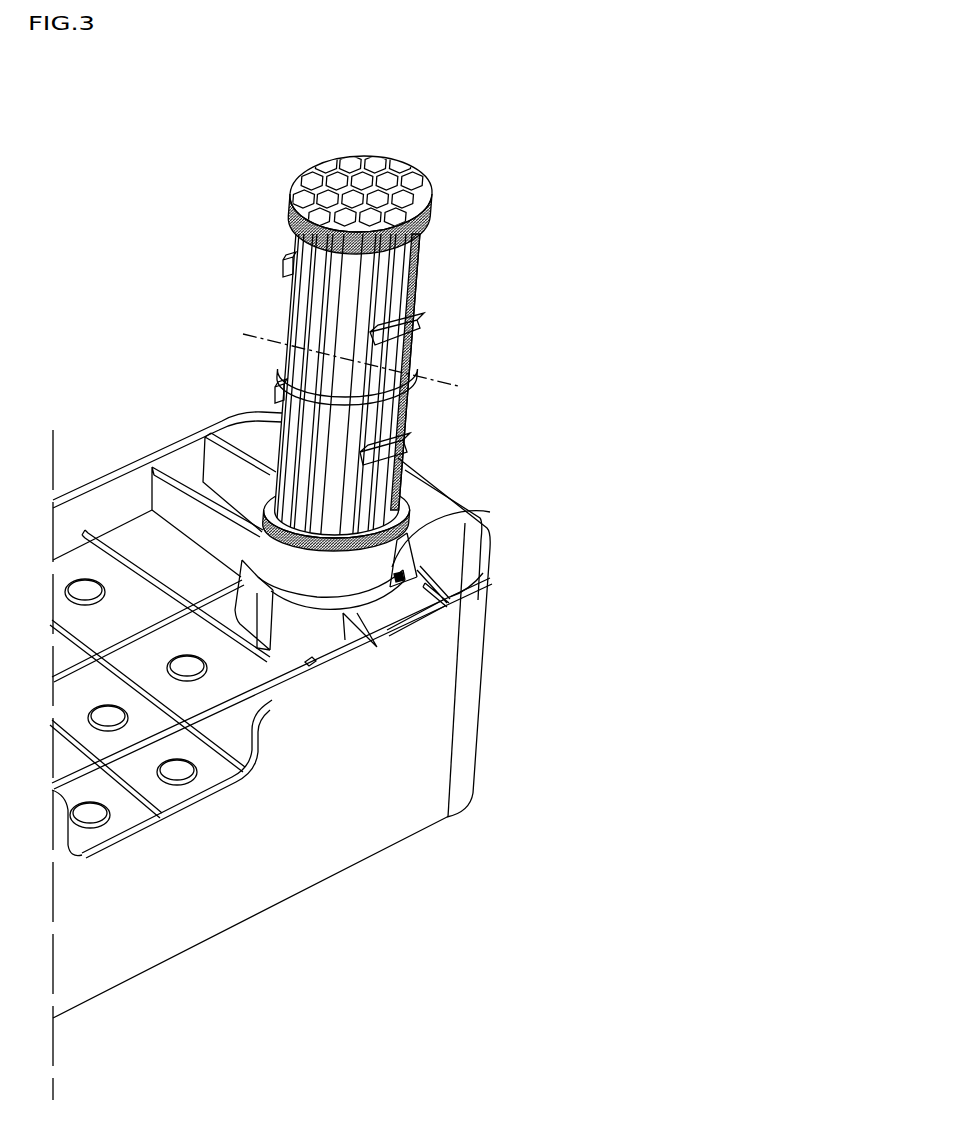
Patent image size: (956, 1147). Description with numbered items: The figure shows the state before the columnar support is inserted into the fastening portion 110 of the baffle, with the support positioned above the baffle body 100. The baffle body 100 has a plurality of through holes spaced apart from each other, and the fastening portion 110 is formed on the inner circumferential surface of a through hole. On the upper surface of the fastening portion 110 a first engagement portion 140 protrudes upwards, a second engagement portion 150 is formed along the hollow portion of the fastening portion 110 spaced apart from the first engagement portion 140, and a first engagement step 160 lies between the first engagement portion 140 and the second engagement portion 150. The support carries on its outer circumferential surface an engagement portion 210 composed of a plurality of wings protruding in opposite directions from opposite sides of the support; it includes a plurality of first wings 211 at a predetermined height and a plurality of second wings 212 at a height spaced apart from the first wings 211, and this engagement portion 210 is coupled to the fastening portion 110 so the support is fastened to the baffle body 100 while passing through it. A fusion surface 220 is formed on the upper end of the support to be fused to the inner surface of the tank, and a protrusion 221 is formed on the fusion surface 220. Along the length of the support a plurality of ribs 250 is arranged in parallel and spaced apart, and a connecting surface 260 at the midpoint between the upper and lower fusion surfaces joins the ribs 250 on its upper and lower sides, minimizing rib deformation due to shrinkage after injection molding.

The baffle body 100 is at (120, 487).
The fastening portion 110 is at (380, 613).
The first engagement portion 140 is at (330, 606).
The second engagement portion 150 is at (400, 545).
The first engagement step 160 is at (400, 573).
The engagement portion 210 is at (389, 490).
The first wings 211 is at (280, 393).
The second wings 212 is at (288, 268).
The fusion surface 220 is at (437, 205).
The protrusion 221 is at (388, 158).
The ribs 250 is at (293, 305).
The connecting surface 260 is at (290, 372).